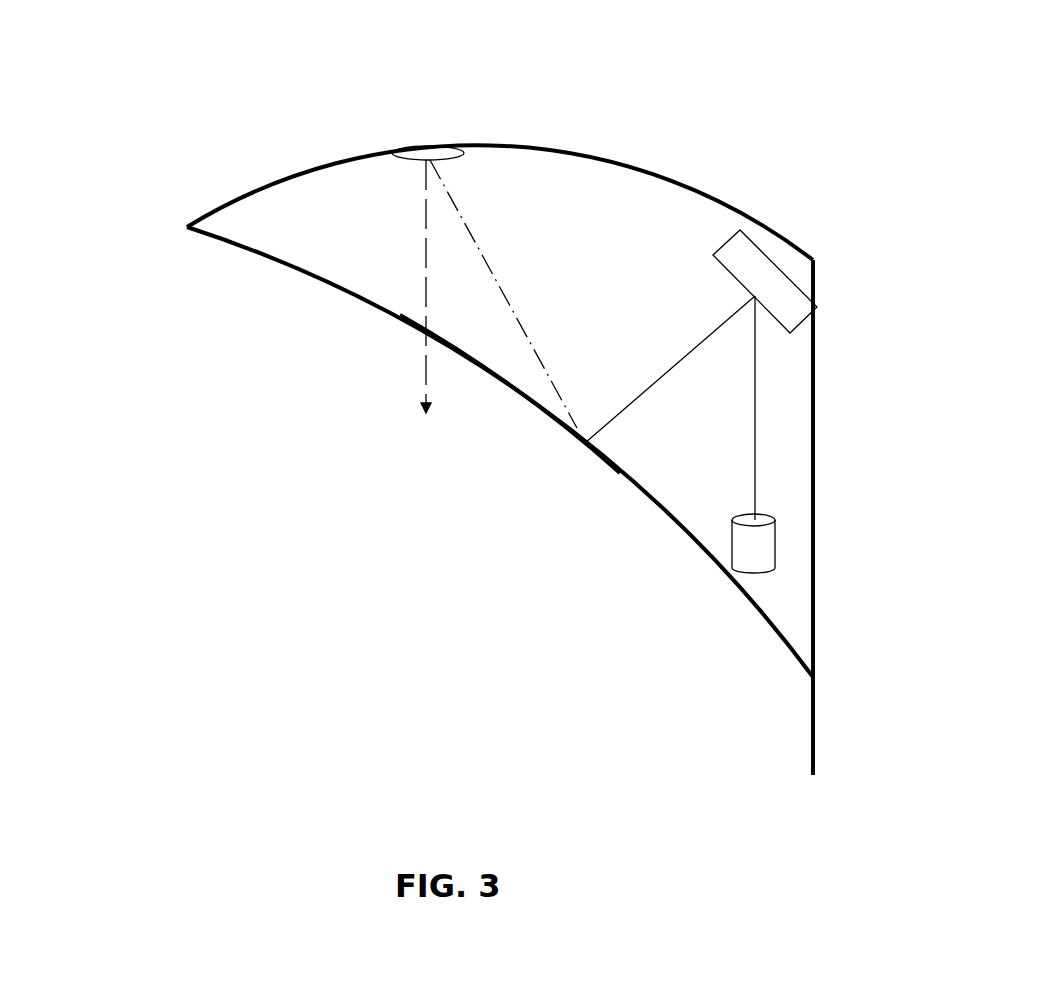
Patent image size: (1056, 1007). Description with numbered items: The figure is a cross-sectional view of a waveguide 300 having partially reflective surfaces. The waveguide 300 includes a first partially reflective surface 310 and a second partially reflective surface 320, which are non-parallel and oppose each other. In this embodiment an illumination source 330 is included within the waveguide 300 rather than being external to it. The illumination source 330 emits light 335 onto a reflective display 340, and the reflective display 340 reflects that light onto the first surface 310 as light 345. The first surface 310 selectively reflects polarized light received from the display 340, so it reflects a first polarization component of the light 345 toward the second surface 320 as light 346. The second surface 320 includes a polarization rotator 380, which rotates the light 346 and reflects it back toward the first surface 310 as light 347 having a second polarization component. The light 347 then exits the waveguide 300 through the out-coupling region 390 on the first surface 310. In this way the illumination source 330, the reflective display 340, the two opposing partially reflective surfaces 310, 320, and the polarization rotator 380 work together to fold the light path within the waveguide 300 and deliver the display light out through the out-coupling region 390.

The waveguide 300 is at (115, 528).
The first partially reflective surface 310 is at (255, 253).
The second partially reflective surface 320 is at (242, 187).
The illumination source 330 is at (750, 543).
The light 335 is at (757, 409).
The reflective display 340 is at (773, 262).
The light 345 is at (700, 335).
The light 346 is at (478, 245).
The light 347 is at (423, 240).
The polarization rotator 380 is at (422, 143).
The out-coupling region 390 is at (447, 350).